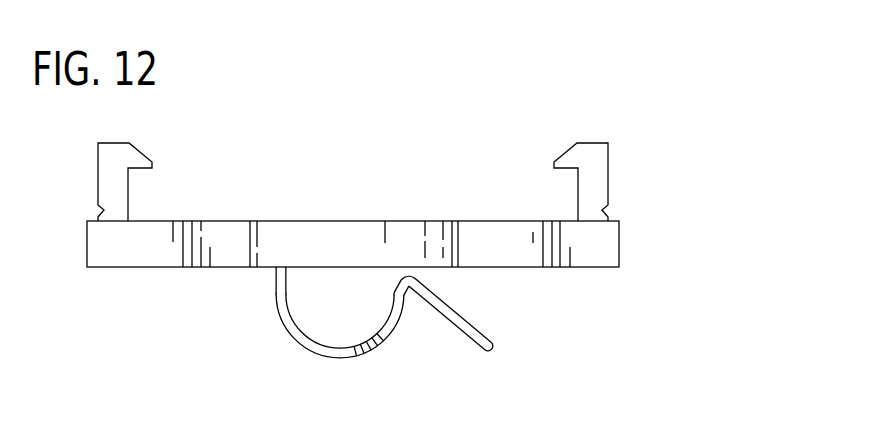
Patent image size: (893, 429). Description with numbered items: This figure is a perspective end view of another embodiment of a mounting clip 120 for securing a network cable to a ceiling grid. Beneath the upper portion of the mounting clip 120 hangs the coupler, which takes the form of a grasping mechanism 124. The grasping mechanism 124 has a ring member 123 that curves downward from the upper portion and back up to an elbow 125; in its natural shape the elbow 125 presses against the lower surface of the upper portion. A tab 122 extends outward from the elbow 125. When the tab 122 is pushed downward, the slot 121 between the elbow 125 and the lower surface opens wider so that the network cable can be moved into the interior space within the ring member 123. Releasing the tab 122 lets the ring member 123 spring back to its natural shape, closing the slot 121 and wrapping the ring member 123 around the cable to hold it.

The mounting clip 120 is at (414, 227).
The slot 121 is at (428, 272).
The tab 122 is at (482, 349).
The ring member 123 is at (287, 332).
The grasping mechanism 124 is at (437, 273).
The elbow 125 is at (413, 275).